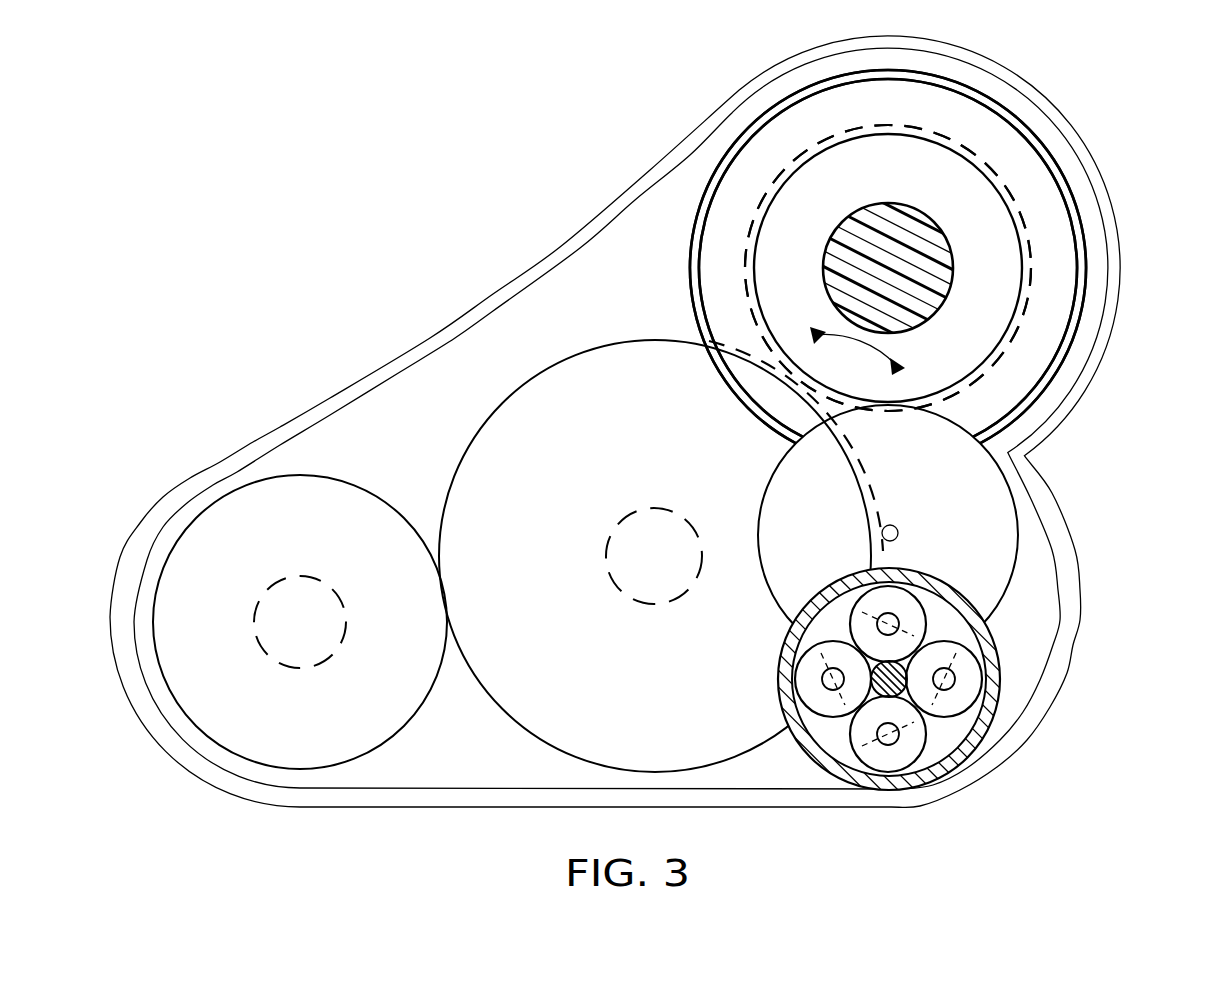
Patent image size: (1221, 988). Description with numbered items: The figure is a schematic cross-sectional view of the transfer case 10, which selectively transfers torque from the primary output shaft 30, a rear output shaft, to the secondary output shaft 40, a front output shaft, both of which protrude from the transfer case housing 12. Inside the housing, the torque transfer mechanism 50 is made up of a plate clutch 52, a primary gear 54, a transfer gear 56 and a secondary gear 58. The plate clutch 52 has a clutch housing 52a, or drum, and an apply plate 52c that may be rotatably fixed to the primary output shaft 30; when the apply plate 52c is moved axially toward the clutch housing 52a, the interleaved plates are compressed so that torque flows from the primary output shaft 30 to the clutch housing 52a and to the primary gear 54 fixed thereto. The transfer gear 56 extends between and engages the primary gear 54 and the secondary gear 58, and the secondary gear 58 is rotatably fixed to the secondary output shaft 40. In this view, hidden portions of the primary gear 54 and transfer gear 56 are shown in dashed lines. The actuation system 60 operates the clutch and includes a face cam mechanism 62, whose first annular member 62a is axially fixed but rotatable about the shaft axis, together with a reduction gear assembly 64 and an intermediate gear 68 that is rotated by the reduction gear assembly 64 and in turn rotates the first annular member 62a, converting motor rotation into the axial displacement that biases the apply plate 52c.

The transfer case 10 is at (247, 228).
The transfer case housing 12 is at (495, 297).
The primary output shaft 30 is at (873, 203).
The secondary output shaft 40 is at (294, 577).
The torque transfer mechanism 50 is at (628, 240).
The plate clutch 52 is at (1034, 63).
The clutch housing 52a is at (1056, 146).
The apply plate 52c is at (1064, 183).
The primary gear 54 is at (759, 198).
The transfer gear 56 is at (487, 420).
The secondary gear 58 is at (304, 476).
The actuation system 60 is at (1098, 680).
The face cam mechanism 62 is at (1030, 268).
The first annular member 62a is at (888, 268).
The reduction gear assembly 64 is at (993, 632).
The intermediate gear 68 is at (1016, 513).